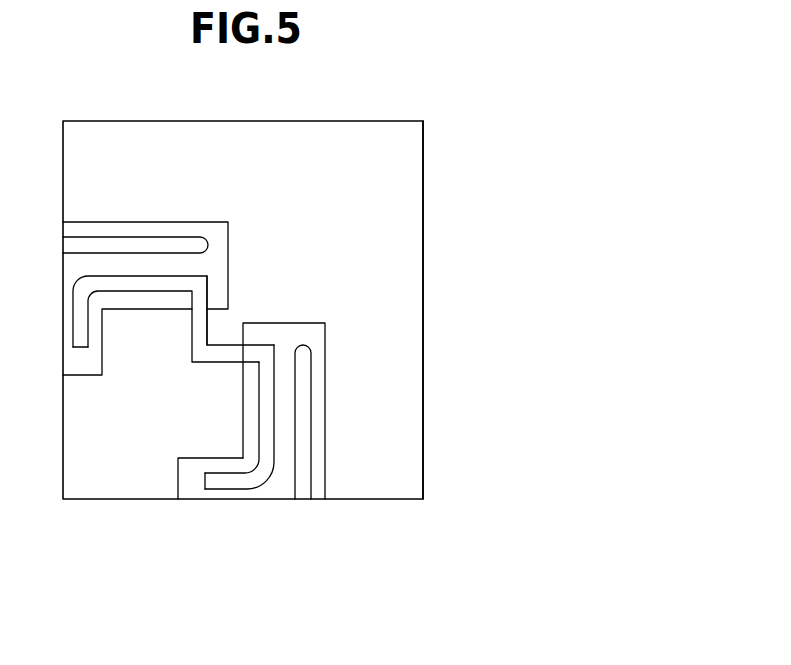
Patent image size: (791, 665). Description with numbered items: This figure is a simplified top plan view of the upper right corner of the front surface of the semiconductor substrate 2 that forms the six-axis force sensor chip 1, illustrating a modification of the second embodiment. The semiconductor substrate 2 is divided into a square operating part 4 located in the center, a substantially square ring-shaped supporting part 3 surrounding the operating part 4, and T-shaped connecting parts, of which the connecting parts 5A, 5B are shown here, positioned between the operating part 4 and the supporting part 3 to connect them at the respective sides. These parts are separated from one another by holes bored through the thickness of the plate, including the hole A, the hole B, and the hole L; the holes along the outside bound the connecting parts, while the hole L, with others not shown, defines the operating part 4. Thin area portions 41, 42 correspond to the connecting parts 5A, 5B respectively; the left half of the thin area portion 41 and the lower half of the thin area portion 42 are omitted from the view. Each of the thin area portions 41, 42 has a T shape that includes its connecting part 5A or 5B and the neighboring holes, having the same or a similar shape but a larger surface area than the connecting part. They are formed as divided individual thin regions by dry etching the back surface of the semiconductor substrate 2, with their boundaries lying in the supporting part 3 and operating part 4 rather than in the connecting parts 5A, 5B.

The six-axis force sensor chip 1 is at (338, 121).
The semiconductor substrate 2 is at (424, 173).
The supporting part 3 is at (400, 332).
The operating part 4 is at (121, 487).
The thin area portion 41 is at (147, 240).
The thin area portion 42 is at (354, 382).
The connecting part 5A is at (83, 268).
The connecting part 5B is at (283, 487).
The hole A is at (129, 247).
The hole B is at (311, 430).
The hole L is at (208, 332).